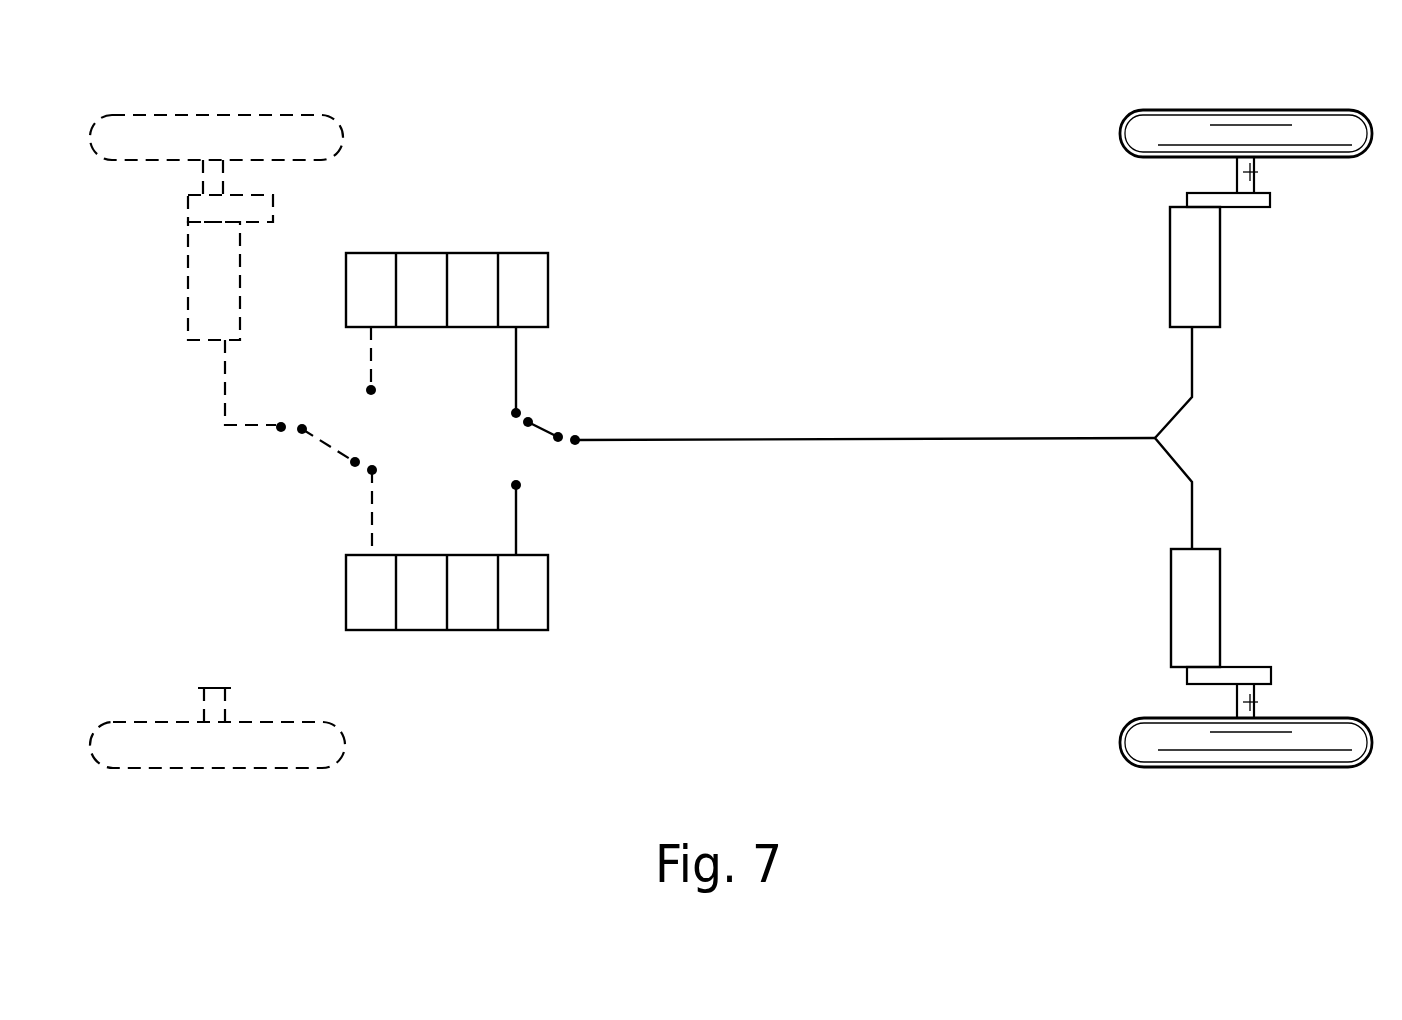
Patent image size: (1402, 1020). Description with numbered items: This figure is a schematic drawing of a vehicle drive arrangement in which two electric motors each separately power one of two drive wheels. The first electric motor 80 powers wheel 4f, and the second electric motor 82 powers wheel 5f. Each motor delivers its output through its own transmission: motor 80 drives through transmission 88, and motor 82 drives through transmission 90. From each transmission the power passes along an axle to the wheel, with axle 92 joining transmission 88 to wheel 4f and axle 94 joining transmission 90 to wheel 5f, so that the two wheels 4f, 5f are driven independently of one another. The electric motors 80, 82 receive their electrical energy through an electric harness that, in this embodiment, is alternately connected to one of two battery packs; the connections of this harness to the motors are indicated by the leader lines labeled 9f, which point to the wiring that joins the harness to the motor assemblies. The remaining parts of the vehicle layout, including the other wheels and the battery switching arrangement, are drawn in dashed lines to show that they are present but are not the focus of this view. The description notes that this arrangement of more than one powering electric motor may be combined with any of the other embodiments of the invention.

The wheel 4f is at (1268, 127).
The wheel 5f is at (1275, 747).
The electrical connection lines 9f is at (520, 511).
The electric motor 80 is at (1177, 250).
The electric motor 82 is at (1188, 592).
The transmission 88 is at (1248, 203).
The transmission 90 is at (1237, 675).
The axle 92 is at (1258, 168).
The axle 94 is at (1257, 703).